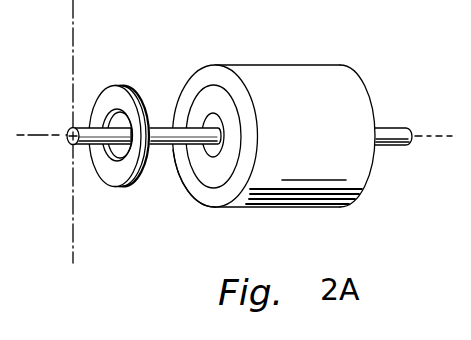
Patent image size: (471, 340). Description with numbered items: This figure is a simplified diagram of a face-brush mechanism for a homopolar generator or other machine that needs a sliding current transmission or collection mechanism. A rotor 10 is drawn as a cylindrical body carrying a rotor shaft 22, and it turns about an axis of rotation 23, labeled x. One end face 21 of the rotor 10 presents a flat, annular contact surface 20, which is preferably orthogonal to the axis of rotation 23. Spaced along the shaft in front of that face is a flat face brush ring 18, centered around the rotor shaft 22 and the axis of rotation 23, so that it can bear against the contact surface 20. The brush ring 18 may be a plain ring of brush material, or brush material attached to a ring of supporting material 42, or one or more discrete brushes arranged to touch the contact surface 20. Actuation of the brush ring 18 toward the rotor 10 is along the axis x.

The rotor 10 is at (314, 66).
The brush ring 18 is at (135, 86).
The contact surface 20 is at (203, 100).
The end face 21 is at (201, 212).
The rotor shaft 22 is at (160, 152).
The axis of rotation 23 is at (237, 131).
The ring of supporting material 42 is at (97, 103).